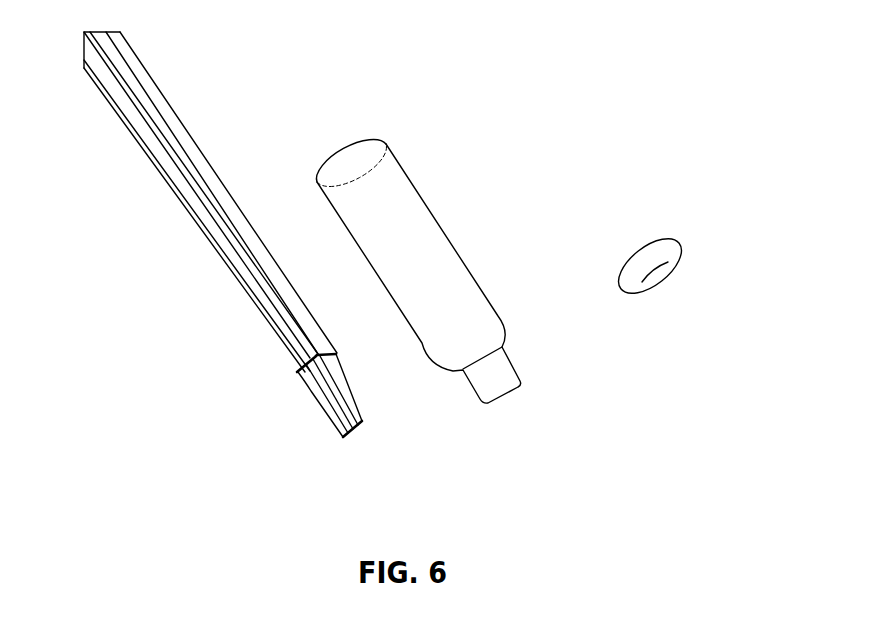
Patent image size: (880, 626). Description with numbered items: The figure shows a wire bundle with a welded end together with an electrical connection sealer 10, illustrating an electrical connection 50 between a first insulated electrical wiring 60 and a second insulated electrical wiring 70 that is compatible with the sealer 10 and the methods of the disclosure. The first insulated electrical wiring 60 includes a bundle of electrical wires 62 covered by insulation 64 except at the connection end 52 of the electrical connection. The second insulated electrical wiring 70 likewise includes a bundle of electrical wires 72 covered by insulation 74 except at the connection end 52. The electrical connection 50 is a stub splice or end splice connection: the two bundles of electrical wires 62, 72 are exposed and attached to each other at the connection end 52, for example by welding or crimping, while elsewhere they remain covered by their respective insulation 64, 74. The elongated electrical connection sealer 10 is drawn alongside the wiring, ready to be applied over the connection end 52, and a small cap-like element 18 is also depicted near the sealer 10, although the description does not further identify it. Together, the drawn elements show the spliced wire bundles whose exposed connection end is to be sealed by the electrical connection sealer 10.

The electrical connection sealer 10 is at (495, 157).
The cap 18 is at (672, 240).
The electrical connection 50 is at (247, 277).
The connection end 52 is at (363, 424).
The first insulated electrical wiring 60 is at (201, 202).
The bundle of electrical wires 62 is at (358, 435).
The insulation 64 is at (265, 323).
The second insulated electrical wiring 70 is at (142, 82).
The bundle of electrical wires 72 is at (350, 393).
The insulation 74 is at (190, 147).